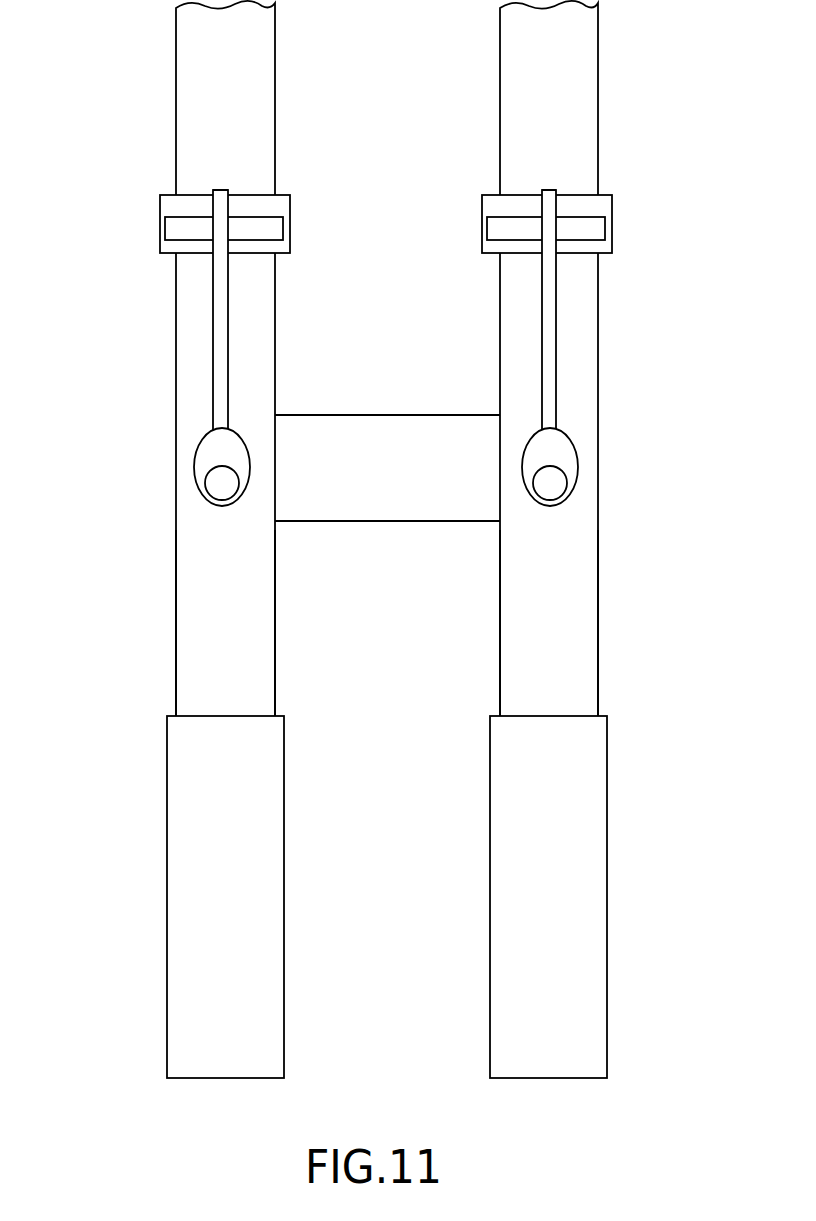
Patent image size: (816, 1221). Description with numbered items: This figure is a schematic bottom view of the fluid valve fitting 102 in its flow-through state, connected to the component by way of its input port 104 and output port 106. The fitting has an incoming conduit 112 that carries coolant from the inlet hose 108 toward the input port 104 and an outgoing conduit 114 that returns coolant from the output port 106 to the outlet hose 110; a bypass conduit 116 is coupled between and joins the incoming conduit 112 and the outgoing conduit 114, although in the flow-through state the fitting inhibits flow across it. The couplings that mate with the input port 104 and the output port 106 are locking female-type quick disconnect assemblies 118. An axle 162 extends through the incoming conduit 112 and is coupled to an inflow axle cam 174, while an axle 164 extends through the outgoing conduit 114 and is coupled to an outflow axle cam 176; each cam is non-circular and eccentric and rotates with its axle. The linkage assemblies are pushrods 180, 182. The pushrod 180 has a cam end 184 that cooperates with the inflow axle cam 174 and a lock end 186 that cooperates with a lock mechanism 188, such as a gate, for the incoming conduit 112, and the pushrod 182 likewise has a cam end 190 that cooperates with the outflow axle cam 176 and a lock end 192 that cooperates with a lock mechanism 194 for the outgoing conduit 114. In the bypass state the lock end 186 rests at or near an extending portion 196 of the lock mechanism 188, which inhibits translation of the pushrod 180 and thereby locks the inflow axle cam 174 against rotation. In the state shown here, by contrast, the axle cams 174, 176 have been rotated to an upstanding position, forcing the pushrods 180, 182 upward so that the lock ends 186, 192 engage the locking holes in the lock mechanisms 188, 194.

The fluid valve fitting 102 is at (116, 336).
The input port 104 is at (500, 65).
The output port 106 is at (276, 63).
The inlet hose 108 is at (607, 866).
The outlet hose 110 is at (167, 853).
The incoming conduit 112 is at (587, 399).
The outgoing conduit 114 is at (187, 563).
The bypass conduit 116 is at (366, 505).
The locking female-type quick disconnect assembly 118 is at (290, 208).
The axle 162 is at (553, 487).
The axle 164 is at (212, 487).
The inflow axle cam 174 is at (578, 455).
The outflow axle cam 176 is at (197, 445).
The pushrod 180 is at (556, 333).
The pushrod 182 is at (213, 305).
The cam end 184 is at (560, 419).
The lock end 186 is at (560, 186).
The lock mechanism 188 is at (604, 225).
The cam end 190 is at (210, 413).
The lock end 192 is at (209, 186).
The lock mechanism 194 is at (175, 225).
The extending portion 196 is at (505, 222).